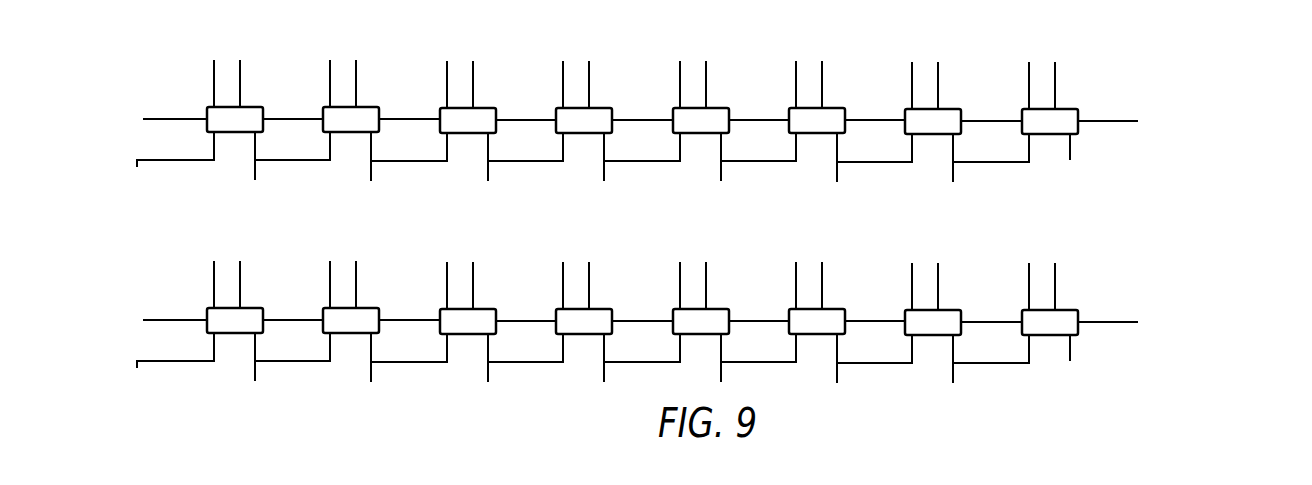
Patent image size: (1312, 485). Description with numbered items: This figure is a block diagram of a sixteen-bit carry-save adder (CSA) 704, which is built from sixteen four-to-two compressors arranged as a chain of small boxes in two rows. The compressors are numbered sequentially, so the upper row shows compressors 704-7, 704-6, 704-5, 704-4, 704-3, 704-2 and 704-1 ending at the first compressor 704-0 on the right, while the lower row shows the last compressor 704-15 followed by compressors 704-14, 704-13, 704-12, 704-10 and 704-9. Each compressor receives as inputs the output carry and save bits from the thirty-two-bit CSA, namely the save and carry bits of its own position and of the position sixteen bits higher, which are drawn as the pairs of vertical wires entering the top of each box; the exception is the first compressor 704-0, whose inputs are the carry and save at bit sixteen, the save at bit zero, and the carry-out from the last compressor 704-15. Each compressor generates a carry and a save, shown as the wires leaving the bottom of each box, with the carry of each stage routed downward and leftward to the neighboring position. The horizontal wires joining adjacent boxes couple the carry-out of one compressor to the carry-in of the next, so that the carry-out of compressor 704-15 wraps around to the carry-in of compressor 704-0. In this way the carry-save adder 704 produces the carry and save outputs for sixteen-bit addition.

The 16-bit carry-save adder (CSA) 704 is at (1197, 128).
The 4:2 compressor 704-7 is at (223, 103).
The 4:2 compressor 704-6 is at (339, 103).
The 4:2 compressor 704-5 is at (455, 104).
The 4:2 compressor 704-4 is at (572, 104).
The 4:2 compressor 704-3 is at (688, 104).
The 4:2 compressor 704-2 is at (804, 104).
The 4:2 compressor 704-1 is at (921, 105).
The first 4:2 compressor 704-0 is at (1037, 105).
The last 4:2 compressor 704-15 is at (221, 304).
The 4:2 compressor 704-14 is at (337, 304).
The 4:2 compressor 704-13 is at (453, 305).
The 4:2 compressor 704-12 is at (570, 305).
The 4:2 compressor 704-10 is at (802, 305).
The 4:2 compressor 704-9 is at (919, 306).